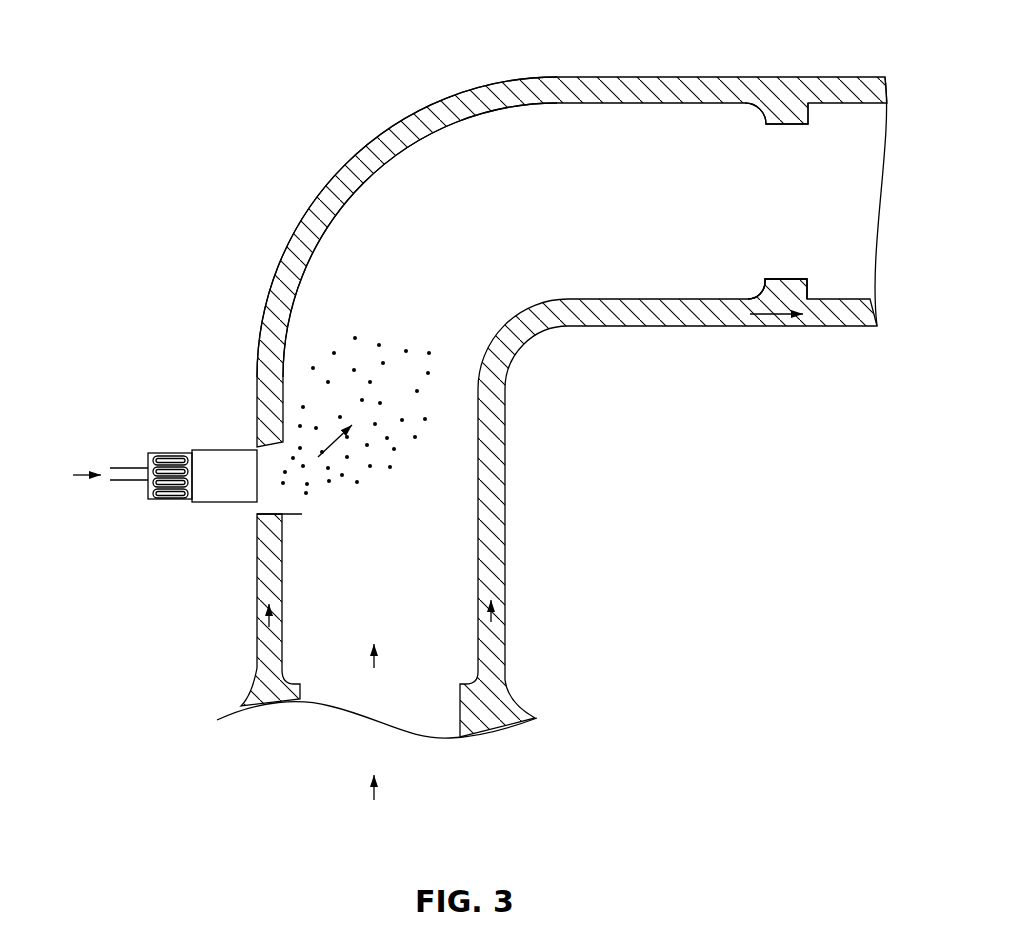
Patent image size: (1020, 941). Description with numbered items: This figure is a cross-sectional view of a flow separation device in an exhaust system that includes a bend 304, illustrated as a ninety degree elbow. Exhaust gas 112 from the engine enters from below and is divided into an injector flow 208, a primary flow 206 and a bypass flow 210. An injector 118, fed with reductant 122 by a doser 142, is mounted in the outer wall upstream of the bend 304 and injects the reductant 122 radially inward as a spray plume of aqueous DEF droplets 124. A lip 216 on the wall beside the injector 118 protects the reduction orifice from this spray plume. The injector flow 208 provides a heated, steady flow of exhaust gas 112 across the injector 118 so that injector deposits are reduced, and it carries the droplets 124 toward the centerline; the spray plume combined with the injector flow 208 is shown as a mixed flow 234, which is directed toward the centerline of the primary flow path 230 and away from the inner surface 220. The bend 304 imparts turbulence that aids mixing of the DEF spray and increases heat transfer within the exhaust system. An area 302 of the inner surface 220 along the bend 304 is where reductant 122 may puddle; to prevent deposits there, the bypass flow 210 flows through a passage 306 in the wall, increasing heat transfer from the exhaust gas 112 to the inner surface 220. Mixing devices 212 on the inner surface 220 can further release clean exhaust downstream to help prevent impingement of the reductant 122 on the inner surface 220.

The exhaust gas 112 is at (376, 778).
The injector 118 is at (227, 448).
The reductant 122 is at (103, 471).
The aqueous DEF droplets 124 is at (421, 324).
The doser 142 is at (168, 500).
The primary flow 206 is at (378, 653).
The injector flow 208 is at (258, 606).
The bypass flow 210 is at (343, 180).
The mixing devices 212 is at (787, 288).
The lip 216 is at (292, 515).
The inner surface 220 is at (690, 104).
The primary flow path 230 is at (655, 128).
The mixed flow 234 is at (337, 436).
The area of the inner surface where reductant may puddle 302 is at (396, 169).
The bend 304 is at (378, 84).
The passage 306 is at (585, 85).